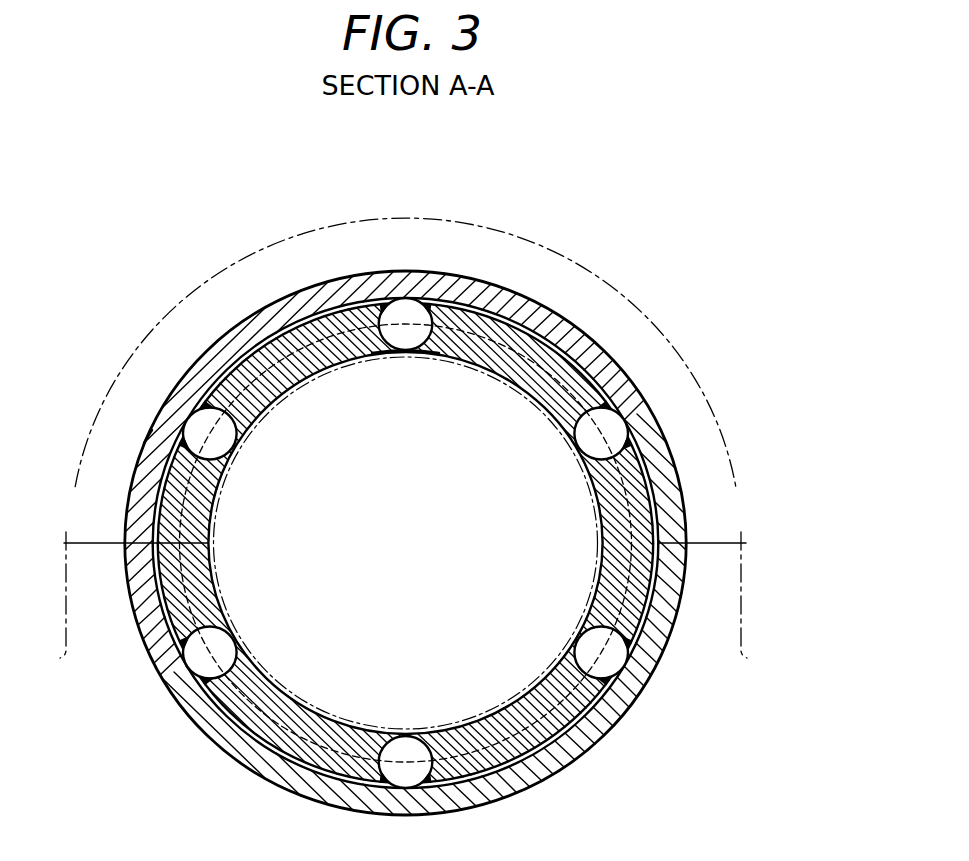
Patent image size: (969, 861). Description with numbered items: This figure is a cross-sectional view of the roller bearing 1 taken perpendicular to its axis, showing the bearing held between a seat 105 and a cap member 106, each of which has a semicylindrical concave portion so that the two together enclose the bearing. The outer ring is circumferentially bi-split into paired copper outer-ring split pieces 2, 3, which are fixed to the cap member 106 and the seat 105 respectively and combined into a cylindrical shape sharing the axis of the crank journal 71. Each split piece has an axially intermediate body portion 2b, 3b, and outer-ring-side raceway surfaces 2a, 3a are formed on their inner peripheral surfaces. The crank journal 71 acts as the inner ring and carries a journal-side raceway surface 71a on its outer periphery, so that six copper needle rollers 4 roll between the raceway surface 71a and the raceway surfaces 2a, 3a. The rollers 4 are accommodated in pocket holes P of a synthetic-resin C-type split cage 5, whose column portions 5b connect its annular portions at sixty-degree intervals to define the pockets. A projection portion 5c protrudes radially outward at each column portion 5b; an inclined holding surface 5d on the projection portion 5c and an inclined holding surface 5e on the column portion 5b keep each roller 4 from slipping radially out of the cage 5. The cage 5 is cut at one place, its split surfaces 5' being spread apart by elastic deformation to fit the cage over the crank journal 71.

The roller bearing 1 is at (757, 308).
The outer-ring split piece 2 is at (647, 366).
The outer-ring-side raceway surface 2a is at (257, 345).
The body portion 2b is at (573, 350).
The outer-ring split piece 3 is at (603, 745).
The outer-ring-side raceway surface 3a is at (233, 736).
The body portion 3b is at (613, 707).
The needle roller 4 is at (400, 318).
The cage 5 is at (405, 505).
The column portion 5b is at (490, 367).
The projection portion 5c is at (527, 337).
The holding surface 5d is at (218, 418).
The holding surface 5e is at (243, 432).
The split surfaces 5' is at (366, 543).
The pocket hole P is at (386, 362).
The crank journal 71 is at (543, 788).
The journal-side raceway surface 71a is at (406, 543).
The seat 105 is at (742, 603).
The cap member 106 is at (752, 468).